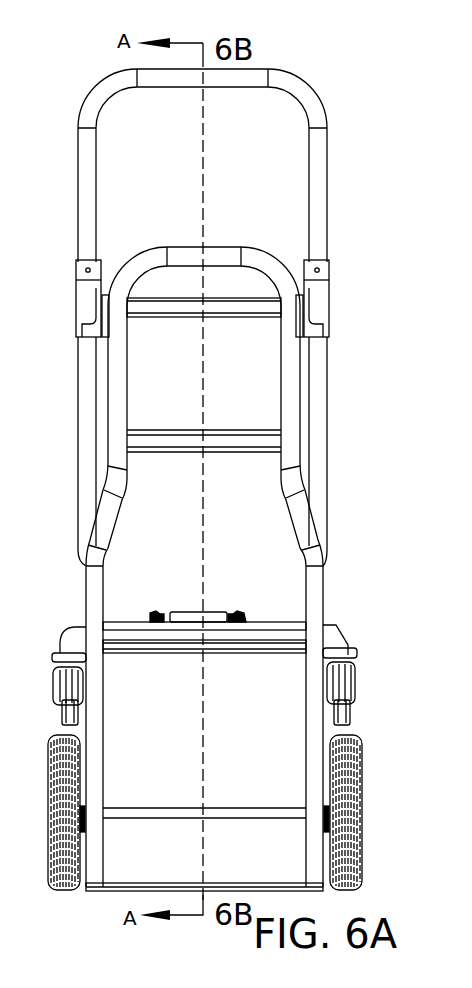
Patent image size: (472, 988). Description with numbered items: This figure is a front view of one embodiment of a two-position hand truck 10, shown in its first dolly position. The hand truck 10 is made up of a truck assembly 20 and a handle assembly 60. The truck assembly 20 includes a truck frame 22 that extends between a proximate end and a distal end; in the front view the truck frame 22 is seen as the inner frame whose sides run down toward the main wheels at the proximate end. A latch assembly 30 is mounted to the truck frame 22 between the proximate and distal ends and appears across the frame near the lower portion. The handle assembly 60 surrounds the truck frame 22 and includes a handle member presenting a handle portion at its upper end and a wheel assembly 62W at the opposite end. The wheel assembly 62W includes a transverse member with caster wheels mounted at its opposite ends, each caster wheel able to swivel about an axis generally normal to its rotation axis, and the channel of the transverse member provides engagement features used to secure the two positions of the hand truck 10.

The two-position hand truck 10 is at (385, 206).
The handle assembly 60 is at (343, 125).
The truck frame 22 is at (215, 240).
The latch assembly 30 is at (217, 594).
The truck assembly 20 is at (282, 746).
The wheel assembly 62W is at (357, 635).